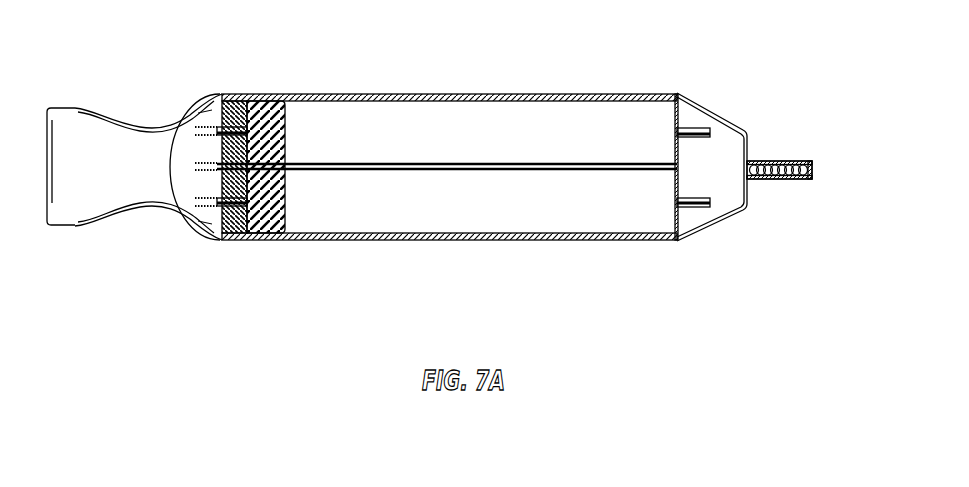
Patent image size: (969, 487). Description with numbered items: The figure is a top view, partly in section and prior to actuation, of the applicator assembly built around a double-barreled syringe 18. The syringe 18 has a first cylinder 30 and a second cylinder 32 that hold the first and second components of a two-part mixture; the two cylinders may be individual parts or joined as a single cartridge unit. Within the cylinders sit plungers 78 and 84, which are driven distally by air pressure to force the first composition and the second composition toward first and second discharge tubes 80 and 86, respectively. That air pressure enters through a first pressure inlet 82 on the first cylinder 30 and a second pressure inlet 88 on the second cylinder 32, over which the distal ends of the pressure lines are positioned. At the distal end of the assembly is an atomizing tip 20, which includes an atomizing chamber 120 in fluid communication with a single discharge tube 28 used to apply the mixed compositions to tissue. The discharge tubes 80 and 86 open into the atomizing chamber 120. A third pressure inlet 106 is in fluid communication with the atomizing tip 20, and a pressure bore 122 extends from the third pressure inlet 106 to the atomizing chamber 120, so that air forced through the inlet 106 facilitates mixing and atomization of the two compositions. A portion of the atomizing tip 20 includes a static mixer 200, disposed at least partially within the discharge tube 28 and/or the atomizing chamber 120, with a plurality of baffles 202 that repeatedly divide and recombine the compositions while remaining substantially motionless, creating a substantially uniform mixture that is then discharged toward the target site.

The double-barreled syringe 18 is at (273, 36).
The atomizing tip 20 is at (703, 229).
The discharge tube 28 is at (812, 175).
The first cylinder 30 is at (462, 110).
The second cylinder 32 is at (458, 226).
The plunger 78 is at (268, 108).
The first discharge tube 80 is at (714, 131).
The first pressure inlet 82 is at (197, 128).
The plunger 84 is at (270, 226).
The second discharge tube 86 is at (705, 203).
The second pressure inlet 88 is at (193, 204).
The third pressure inlet 106 is at (193, 170).
The atomizing chamber 120 is at (725, 153).
The pressure bore 122 is at (372, 173).
The static mixer 200 is at (812, 165).
The baffles 202 is at (783, 177).